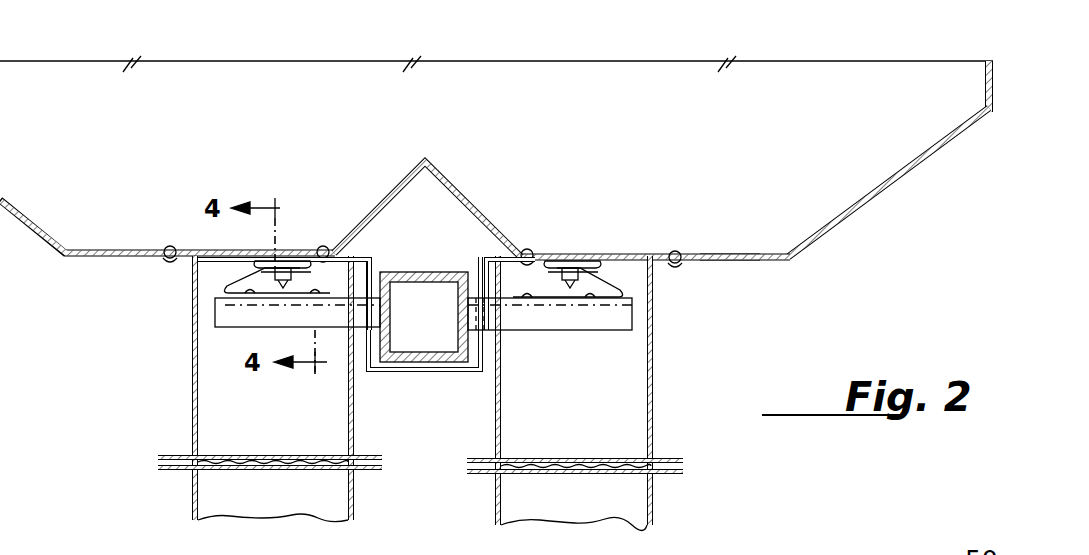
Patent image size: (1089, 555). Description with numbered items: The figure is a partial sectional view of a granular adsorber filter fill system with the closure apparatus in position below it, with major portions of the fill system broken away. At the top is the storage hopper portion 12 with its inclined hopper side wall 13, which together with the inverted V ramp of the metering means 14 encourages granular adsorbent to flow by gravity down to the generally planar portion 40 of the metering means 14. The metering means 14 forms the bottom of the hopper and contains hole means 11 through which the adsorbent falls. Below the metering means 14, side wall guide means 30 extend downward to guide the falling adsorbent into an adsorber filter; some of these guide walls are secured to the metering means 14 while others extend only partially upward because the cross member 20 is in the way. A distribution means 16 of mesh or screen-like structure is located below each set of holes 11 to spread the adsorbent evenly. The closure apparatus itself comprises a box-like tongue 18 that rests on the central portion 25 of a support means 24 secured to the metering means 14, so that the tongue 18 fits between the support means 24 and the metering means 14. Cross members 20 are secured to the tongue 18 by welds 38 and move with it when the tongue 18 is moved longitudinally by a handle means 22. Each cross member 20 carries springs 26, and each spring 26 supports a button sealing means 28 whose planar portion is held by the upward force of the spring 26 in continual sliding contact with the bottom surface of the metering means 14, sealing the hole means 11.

The hole means 11 is at (563, 257).
The hopper portion 12 is at (955, 96).
The hopper side wall 13 is at (918, 165).
The metering means 14 is at (747, 243).
The distribution means 16 is at (590, 465).
The tongue 18 is at (412, 272).
The cross members 20 is at (570, 330).
The handle means 22 is at (437, 165).
The support means 24 is at (405, 372).
The central portion 25 is at (455, 372).
The spring means 26 is at (604, 290).
The button sealing means 28 is at (583, 259).
The side wall guide means 30 is at (654, 378).
The welds 38 is at (478, 300).
The planar portion 40 is at (740, 262).